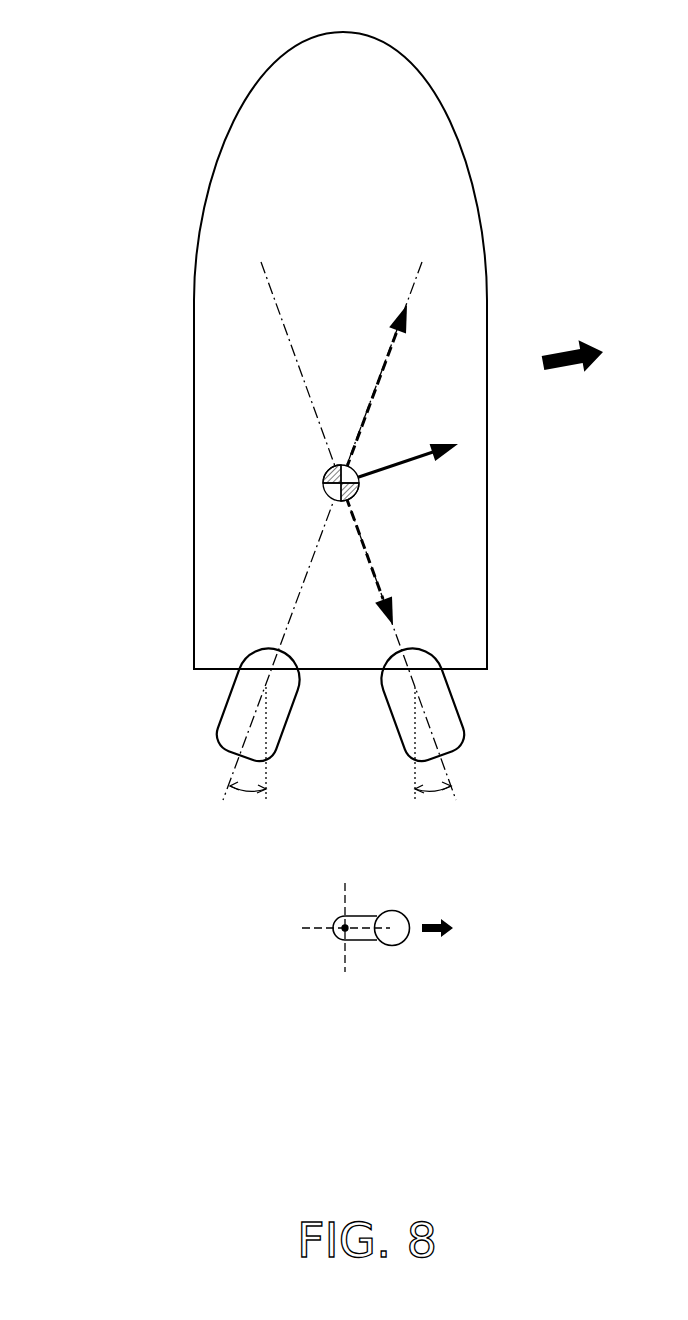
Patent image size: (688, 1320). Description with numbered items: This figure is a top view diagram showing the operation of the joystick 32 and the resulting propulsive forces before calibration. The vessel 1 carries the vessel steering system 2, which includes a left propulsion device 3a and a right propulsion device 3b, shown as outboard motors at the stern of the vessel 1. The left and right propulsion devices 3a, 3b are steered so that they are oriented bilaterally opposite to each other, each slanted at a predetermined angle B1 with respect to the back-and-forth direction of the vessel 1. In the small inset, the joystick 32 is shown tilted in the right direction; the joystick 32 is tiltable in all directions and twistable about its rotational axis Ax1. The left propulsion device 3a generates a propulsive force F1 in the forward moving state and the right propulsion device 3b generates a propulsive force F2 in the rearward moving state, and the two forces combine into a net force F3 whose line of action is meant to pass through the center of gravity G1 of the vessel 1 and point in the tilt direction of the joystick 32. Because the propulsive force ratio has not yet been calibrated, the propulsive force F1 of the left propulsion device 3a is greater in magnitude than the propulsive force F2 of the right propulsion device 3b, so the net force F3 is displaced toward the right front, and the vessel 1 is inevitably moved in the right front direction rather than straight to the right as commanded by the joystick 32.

The vessel 1 is at (185, 102).
The vessel steering system 2 is at (142, 754).
The left propulsion device 3a is at (233, 703).
The right propulsion device 3b is at (443, 703).
The center of gravity G1 is at (323, 490).
The propulsive force of the left propulsion device F1 is at (367, 417).
The propulsive force of the right propulsion device F2 is at (373, 565).
The net force F3 is at (397, 467).
The predetermined angle B1 is at (344, 809).
The rotational axis Ax1 is at (342, 938).
The joystick 32 is at (367, 935).